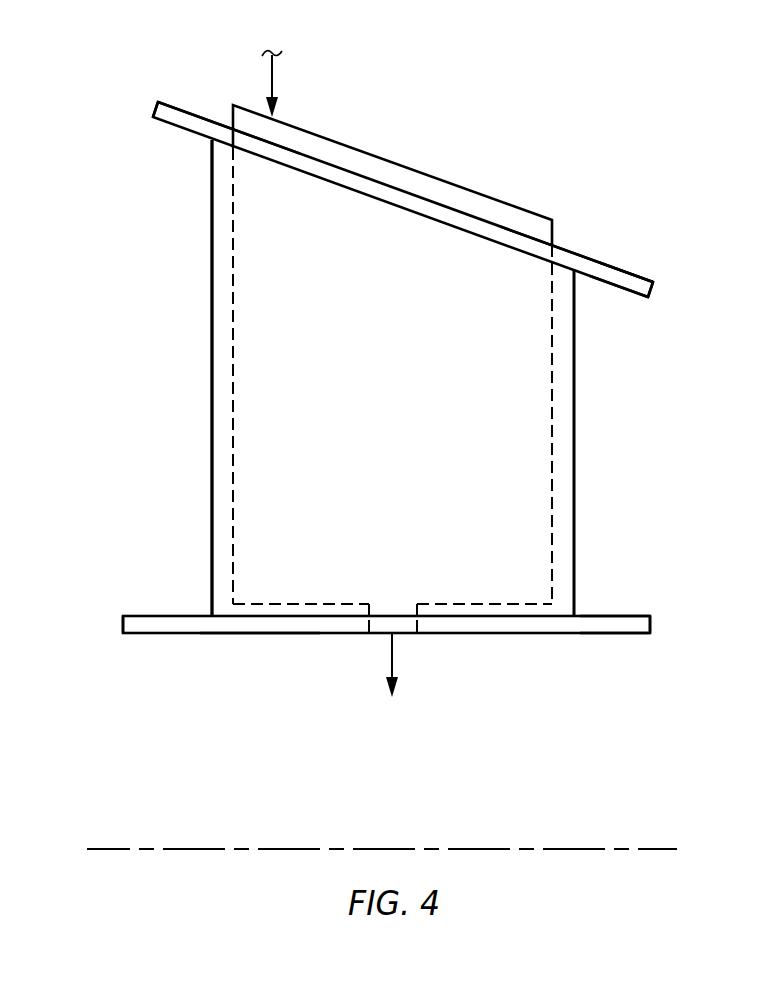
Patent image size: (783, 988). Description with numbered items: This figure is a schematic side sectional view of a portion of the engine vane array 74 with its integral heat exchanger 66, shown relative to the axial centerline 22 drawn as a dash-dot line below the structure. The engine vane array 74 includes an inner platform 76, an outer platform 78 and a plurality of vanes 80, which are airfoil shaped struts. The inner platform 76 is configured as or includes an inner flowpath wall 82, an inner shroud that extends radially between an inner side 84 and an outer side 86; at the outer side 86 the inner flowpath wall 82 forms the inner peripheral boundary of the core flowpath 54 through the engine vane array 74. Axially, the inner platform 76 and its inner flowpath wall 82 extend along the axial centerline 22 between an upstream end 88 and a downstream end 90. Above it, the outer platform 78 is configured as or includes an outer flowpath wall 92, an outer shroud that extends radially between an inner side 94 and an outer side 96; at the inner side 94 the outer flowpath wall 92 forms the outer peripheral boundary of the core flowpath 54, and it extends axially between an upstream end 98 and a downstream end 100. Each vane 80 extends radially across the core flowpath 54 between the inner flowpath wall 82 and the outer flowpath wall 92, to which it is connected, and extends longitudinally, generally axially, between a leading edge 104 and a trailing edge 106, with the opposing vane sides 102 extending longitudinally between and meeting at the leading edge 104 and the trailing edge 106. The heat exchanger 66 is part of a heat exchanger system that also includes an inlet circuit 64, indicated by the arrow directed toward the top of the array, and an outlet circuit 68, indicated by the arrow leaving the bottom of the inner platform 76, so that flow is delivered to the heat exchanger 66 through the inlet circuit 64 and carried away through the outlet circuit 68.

The axial centerline 22 is at (662, 848).
The core flowpath 54 is at (150, 262).
The inlet circuit 64 is at (272, 73).
The heat exchanger 66 is at (441, 158).
The outlet circuit 68 is at (392, 655).
The engine vane array 74 is at (629, 230).
The inner platform 76 is at (147, 658).
The outer platform 78 is at (185, 90).
The vanes 80 is at (184, 373).
The inner flowpath wall 82 is at (258, 634).
The inner side of the inner flowpath wall 84 is at (620, 634).
The outer side of the inner flowpath wall 86 is at (620, 616).
The upstream end of the inner platform 88 is at (122, 625).
The downstream end of the inner platform 90 is at (651, 626).
The outer flowpath wall 92 is at (582, 250).
The inner side of the outer flowpath wall 94 is at (638, 299).
The outer side of the outer flowpath wall 96 is at (646, 271).
The upstream end of the outer platform 98 is at (152, 110).
The downstream end of the outer platform 100 is at (662, 294).
The vane sides 102 is at (248, 478).
The leading edge 104 is at (211, 215).
The trailing edge 106 is at (575, 341).